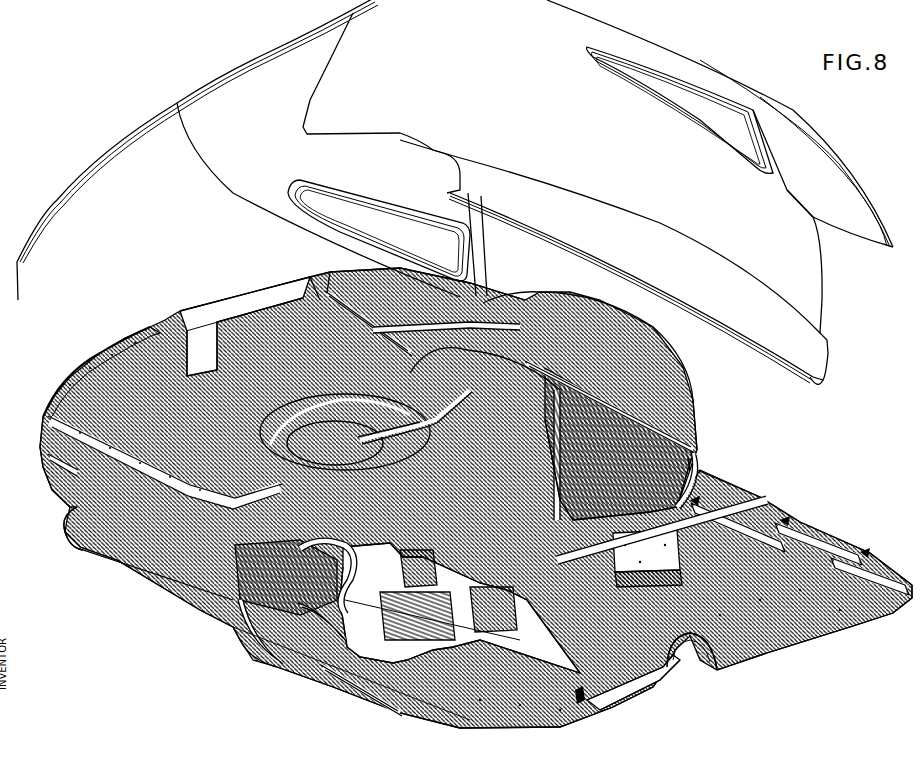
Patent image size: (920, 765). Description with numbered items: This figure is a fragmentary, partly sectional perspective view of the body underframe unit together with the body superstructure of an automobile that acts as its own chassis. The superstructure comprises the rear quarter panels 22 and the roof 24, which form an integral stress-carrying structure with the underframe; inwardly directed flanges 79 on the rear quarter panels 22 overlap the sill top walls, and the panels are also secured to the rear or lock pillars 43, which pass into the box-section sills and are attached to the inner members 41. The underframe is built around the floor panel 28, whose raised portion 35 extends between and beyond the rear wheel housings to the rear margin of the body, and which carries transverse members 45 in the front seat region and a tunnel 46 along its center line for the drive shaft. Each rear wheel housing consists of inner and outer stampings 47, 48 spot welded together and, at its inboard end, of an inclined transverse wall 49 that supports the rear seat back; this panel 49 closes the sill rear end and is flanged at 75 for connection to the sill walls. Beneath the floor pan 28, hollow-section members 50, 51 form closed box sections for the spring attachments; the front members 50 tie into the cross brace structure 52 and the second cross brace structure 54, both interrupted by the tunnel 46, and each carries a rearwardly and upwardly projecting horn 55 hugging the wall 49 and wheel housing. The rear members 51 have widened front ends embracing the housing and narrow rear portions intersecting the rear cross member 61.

The rear quarter panel 22 is at (97, 203).
The roof 24 is at (813, 178).
The floor panel 28 is at (830, 630).
The raised portion 35 is at (247, 348).
The inner member 41 is at (800, 520).
The rear or lock pillar 43 is at (773, 162).
The transverse member 45 is at (587, 682).
The tunnel 46 is at (678, 673).
The inner stamping 47 is at (533, 437).
The outer stamping 48 is at (685, 423).
The inclined transverse wall or web 49 is at (670, 460).
The front hollow-section member 50 is at (400, 627).
The rear hollow-section member 51 is at (327, 330).
The cross brace structure 52 is at (353, 682).
The second cross brace structure 54 is at (460, 608).
The horn 55 is at (333, 543).
The rear cross member 61 is at (112, 360).
The flange 75 is at (693, 470).
The inwardly directed flange 79 is at (813, 380).